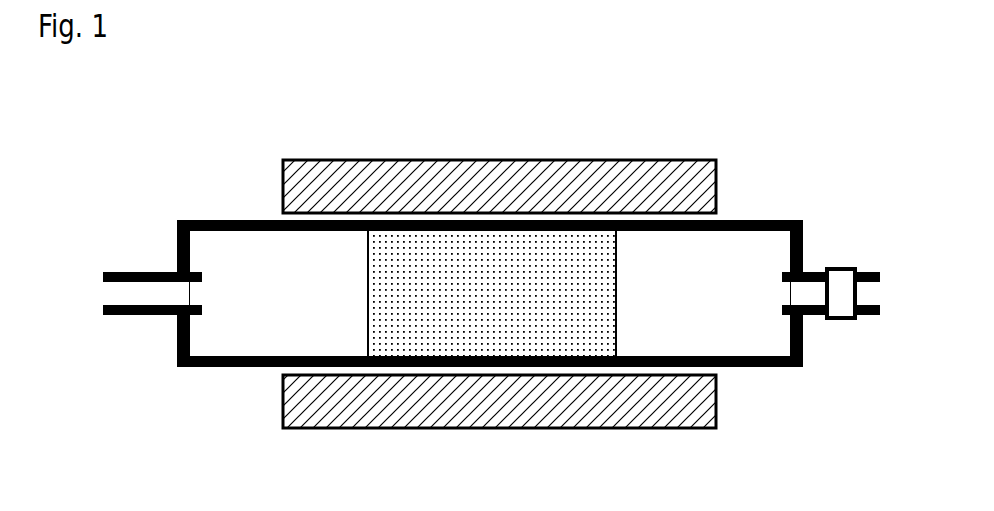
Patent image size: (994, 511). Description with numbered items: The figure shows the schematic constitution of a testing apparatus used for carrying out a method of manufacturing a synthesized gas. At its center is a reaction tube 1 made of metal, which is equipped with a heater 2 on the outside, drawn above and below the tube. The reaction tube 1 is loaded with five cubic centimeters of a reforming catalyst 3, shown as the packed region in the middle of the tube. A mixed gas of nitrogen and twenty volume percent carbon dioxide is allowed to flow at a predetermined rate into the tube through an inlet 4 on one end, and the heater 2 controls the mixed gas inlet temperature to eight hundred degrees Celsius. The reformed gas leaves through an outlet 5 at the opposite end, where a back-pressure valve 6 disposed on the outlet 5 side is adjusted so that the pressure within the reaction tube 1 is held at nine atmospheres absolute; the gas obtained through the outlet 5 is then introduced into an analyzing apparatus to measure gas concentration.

The reaction tube 1 is at (490, 222).
The heater 2 is at (333, 159).
The reforming catalyst 3 is at (617, 297).
The inlet of reaction tube 4 is at (105, 293).
The outlet of reaction tube 5 is at (877, 292).
The back-pressure valve 6 is at (842, 322).